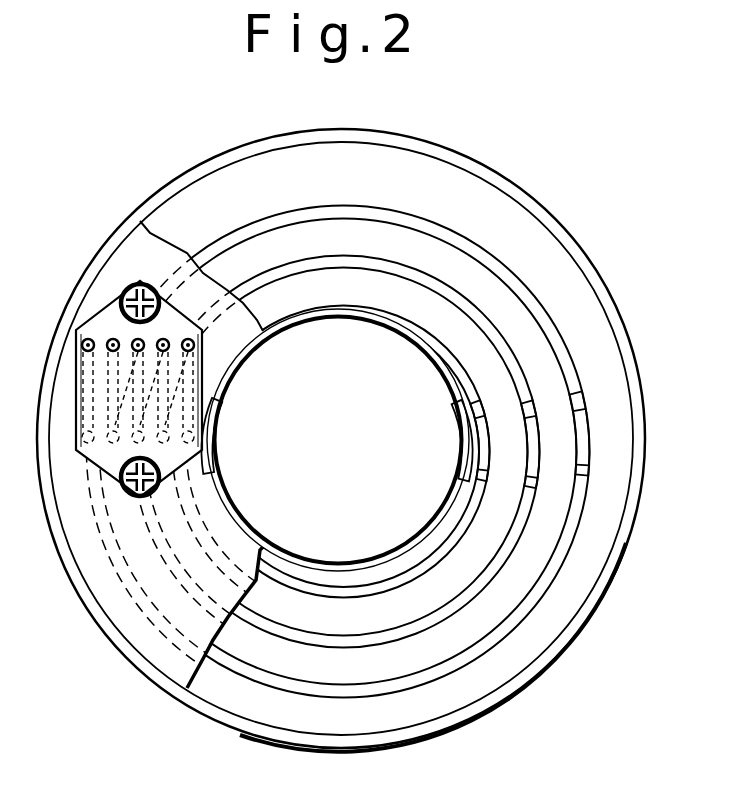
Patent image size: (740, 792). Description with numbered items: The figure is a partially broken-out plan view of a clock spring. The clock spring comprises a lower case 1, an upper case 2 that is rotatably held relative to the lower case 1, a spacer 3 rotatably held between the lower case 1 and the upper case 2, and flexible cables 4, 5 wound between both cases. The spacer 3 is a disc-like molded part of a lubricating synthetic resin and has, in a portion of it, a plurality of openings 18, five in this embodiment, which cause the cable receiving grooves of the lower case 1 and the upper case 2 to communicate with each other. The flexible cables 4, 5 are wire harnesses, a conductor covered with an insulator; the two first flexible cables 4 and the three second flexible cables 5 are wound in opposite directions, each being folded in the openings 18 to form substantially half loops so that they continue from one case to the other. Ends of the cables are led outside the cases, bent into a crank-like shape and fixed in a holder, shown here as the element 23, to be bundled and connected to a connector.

The lower case 1 is at (623, 336).
The upper case 2 is at (117, 600).
The spacer 3 is at (560, 292).
The first flexible cables 4 is at (473, 312).
The second flexible cables 5 is at (465, 525).
The openings 18 is at (590, 399).
The connector 23 is at (108, 318).